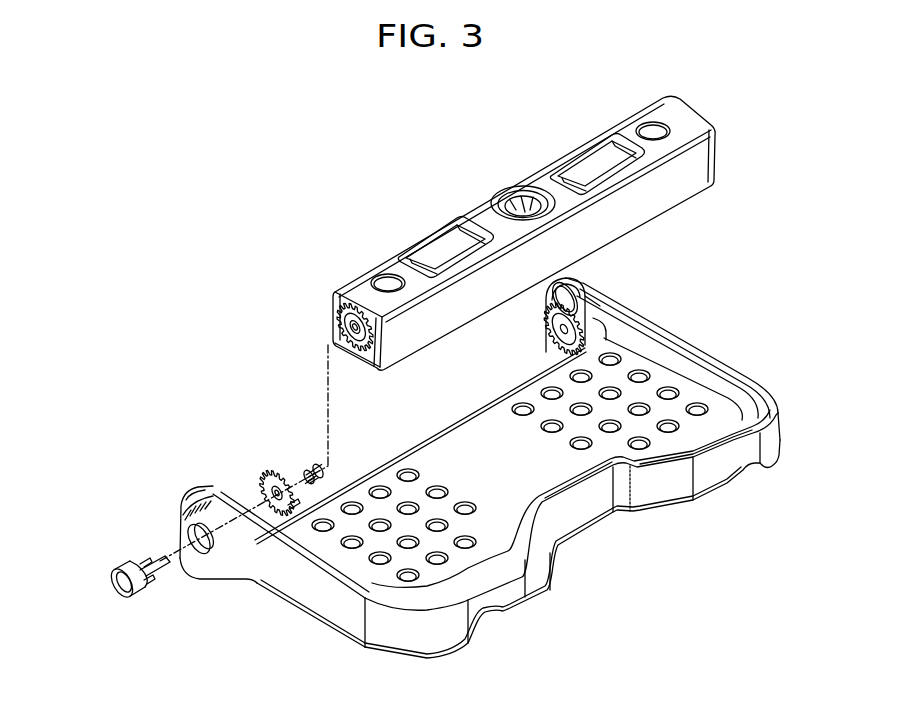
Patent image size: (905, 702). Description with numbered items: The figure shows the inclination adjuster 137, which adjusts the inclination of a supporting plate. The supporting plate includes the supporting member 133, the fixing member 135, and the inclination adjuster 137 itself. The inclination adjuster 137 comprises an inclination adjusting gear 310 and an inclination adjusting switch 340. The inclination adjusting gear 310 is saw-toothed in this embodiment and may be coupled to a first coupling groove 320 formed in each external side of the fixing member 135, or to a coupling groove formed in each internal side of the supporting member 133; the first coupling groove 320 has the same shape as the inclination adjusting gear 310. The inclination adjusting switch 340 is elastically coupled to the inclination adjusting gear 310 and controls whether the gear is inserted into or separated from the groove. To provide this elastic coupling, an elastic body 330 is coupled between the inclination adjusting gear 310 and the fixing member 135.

The supporting member 133 is at (297, 599).
The fixing member 135 is at (478, 213).
The inclination adjuster 137 is at (322, 252).
The inclination adjusting gear 310 is at (268, 472).
The first coupling groove 320 is at (313, 322).
The elastic body 330 is at (309, 463).
The inclination adjusting switch 340 is at (117, 568).